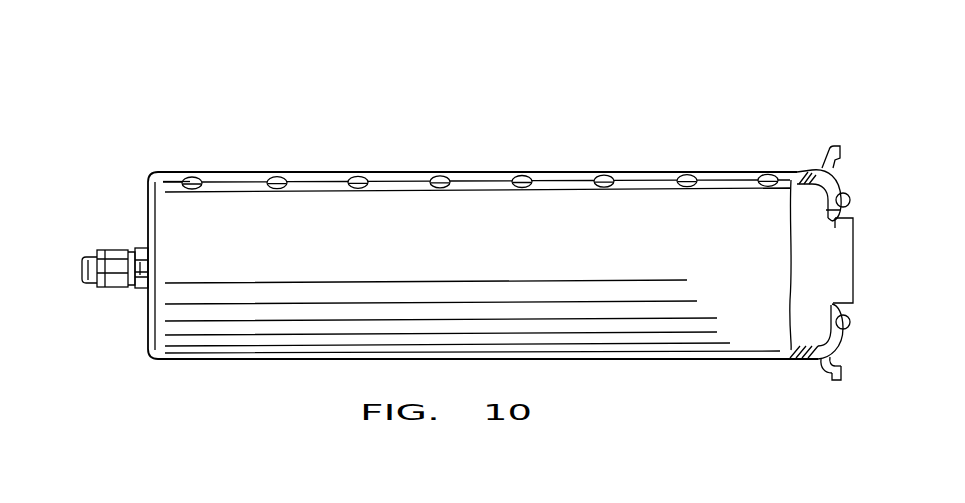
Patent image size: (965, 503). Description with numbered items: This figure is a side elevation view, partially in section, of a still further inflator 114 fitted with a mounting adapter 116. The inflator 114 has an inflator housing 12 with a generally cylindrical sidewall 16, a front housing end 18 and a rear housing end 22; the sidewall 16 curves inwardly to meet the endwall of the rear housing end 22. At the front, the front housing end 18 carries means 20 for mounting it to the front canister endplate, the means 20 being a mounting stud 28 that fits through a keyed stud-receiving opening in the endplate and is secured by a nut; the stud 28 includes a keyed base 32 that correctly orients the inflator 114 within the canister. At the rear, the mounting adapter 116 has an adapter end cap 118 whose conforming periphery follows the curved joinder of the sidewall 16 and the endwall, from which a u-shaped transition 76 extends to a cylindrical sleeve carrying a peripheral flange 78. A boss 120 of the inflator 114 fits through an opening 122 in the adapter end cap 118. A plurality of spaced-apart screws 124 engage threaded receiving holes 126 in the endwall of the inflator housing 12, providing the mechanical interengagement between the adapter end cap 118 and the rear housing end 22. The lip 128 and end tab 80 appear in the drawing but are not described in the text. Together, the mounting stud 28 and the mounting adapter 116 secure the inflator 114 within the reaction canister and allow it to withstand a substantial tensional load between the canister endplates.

The inflator 114 is at (416, 110).
The inflator housing 12 is at (180, 172).
The cylindrical sidewall 16 is at (308, 182).
The front housing end 18 is at (148, 212).
The means for mounting 20 is at (98, 286).
The mounting stud 28 is at (107, 290).
The keyed base 32 is at (137, 284).
The mounting adapter 116 is at (829, 150).
The threaded receiving holes 126 is at (802, 174).
The screws 124 is at (848, 196).
The adapter end cap 118 is at (840, 216).
The opening 122 is at (842, 224).
The boss 120 is at (853, 258).
The rear housing end 22 is at (818, 306).
The lip 128 is at (823, 315).
The u-shaped transition 76 is at (836, 354).
The peripheral flange 78 is at (828, 380).
The end tab 80 is at (842, 379).